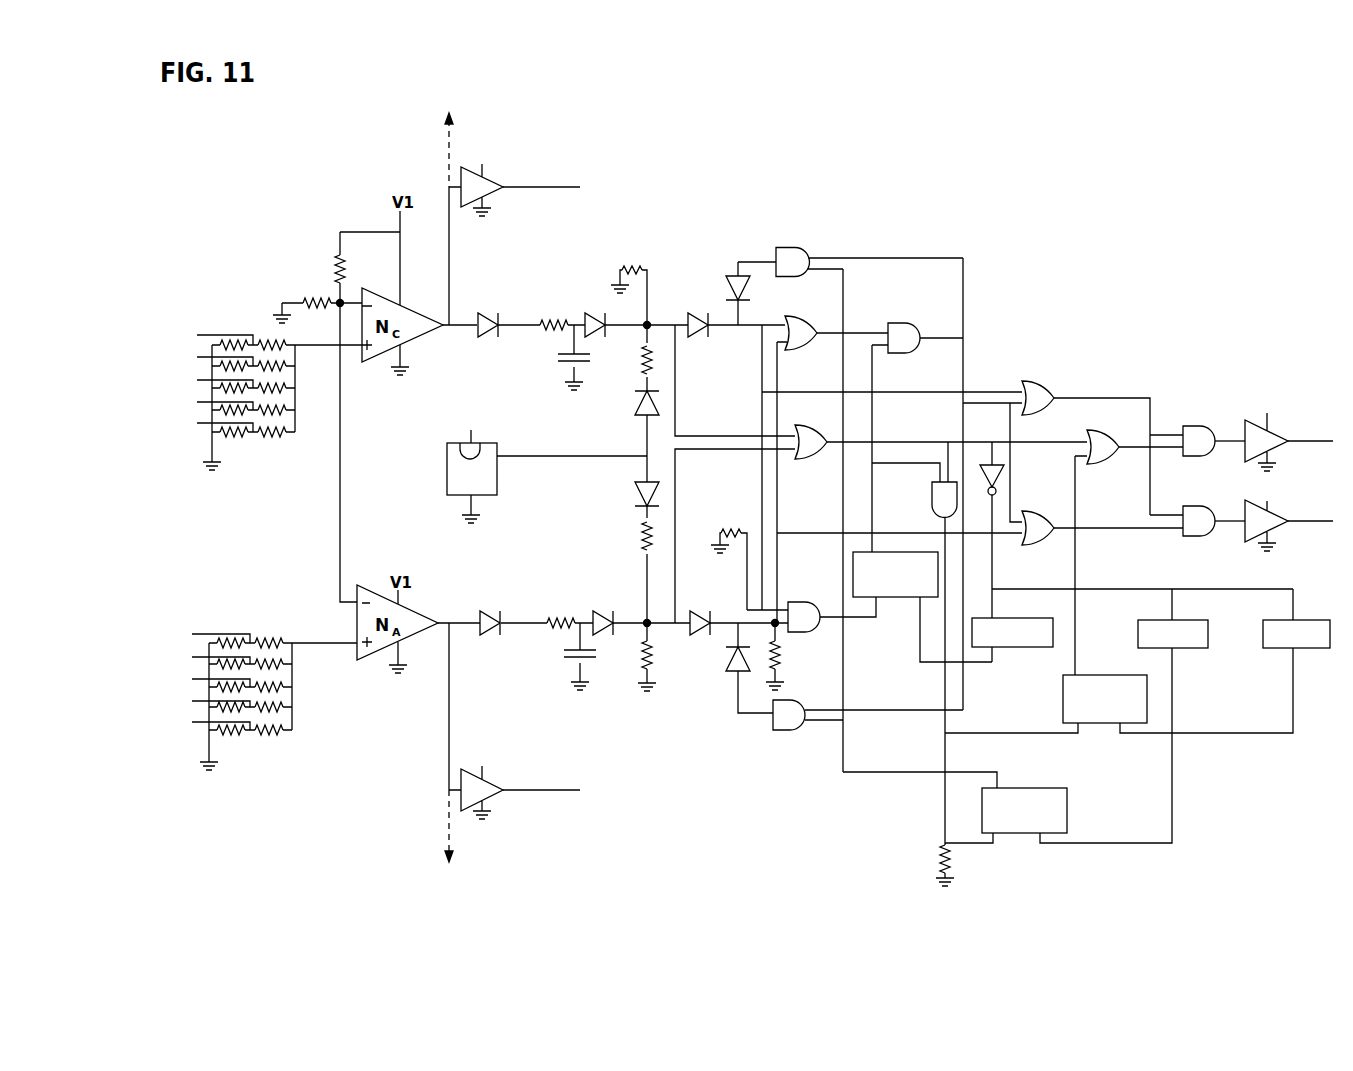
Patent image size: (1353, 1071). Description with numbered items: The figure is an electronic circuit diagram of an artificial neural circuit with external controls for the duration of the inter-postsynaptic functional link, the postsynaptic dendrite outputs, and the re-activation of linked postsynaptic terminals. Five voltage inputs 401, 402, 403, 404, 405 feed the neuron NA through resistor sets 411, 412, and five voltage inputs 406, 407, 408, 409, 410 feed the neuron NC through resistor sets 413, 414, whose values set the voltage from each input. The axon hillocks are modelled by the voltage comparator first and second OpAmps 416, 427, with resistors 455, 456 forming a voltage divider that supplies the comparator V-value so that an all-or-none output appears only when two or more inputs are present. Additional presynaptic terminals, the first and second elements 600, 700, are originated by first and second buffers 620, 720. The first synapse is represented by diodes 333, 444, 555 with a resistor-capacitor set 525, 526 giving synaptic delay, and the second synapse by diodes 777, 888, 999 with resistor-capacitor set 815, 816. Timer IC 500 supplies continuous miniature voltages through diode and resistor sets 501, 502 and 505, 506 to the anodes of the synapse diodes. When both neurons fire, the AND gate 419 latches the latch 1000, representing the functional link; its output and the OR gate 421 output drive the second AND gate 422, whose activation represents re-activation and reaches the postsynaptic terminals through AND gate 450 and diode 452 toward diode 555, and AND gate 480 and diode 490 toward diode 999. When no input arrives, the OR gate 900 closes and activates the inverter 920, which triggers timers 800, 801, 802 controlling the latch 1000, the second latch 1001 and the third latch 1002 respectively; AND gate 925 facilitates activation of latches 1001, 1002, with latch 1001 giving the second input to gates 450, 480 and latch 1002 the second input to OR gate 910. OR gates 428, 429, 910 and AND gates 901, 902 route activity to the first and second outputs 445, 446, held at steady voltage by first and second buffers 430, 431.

The diode 333 is at (491, 608).
The voltage input 401 is at (225, 635).
The voltage input 402 is at (225, 657).
The voltage input 403 is at (225, 679).
The voltage input 404 is at (225, 700).
The voltage input 405 is at (225, 722).
The voltage input 406 is at (229, 337).
The voltage input 407 is at (229, 358).
The voltage input 408 is at (229, 381).
The voltage input 409 is at (229, 403).
The voltage input 410 is at (229, 424).
The resistor set 411 is at (228, 742).
The resistor set 412 is at (268, 742).
The resistor set 413 is at (235, 446).
The resistor set 414 is at (272, 446).
The first OpAmp 416 is at (378, 664).
The AND gate 419 is at (798, 595).
The OR gate 421 is at (822, 304).
The second AND gate 422 is at (899, 319).
The second OpAmp 427 is at (378, 366).
The OR gate 428 is at (1031, 378).
The OR gate 429 is at (1031, 504).
The first buffer 430 is at (1285, 531).
The second buffer 431 is at (1280, 421).
The diode 444 is at (604, 608).
The first output 445 is at (1311, 509).
The second output 446 is at (1311, 429).
The AND gate 450 is at (791, 736).
The diode 452 is at (730, 682).
The resistor 455 is at (334, 262).
The resistor 456 is at (312, 291).
The AND gate 480 is at (796, 244).
The diode 490 is at (735, 270).
The timer IC 500 is at (445, 476).
The diode 501 is at (640, 400).
The resistor 502 is at (641, 364).
The diode 505 is at (638, 500).
The resistor 506 is at (638, 540).
The resistor 525 is at (549, 634).
The capacitor 526 is at (566, 670).
The diode 555 is at (698, 608).
The first element 600 is at (541, 778).
The first buffer 620 is at (494, 776).
The second element 700 is at (541, 175).
The second buffer 720 is at (494, 172).
The diode 777 is at (488, 308).
The timer 800 is at (1005, 671).
The timer 801 is at (1134, 641).
The timer 802 is at (1283, 656).
The resistor 815 is at (543, 334).
The capacitor 816 is at (563, 374).
The diode 888 is at (590, 308).
The OR gate 900 is at (809, 464).
The AND gate 901 is at (1194, 420).
The AND gate 902 is at (1198, 545).
The OR gate 910 is at (1098, 428).
The inverter 920 is at (976, 462).
The AND gate 925 is at (929, 506).
The diode 999 is at (695, 308).
The latch 1000 is at (900, 602).
The second latch 1001 is at (1013, 839).
The third latch 1002 is at (1099, 727).